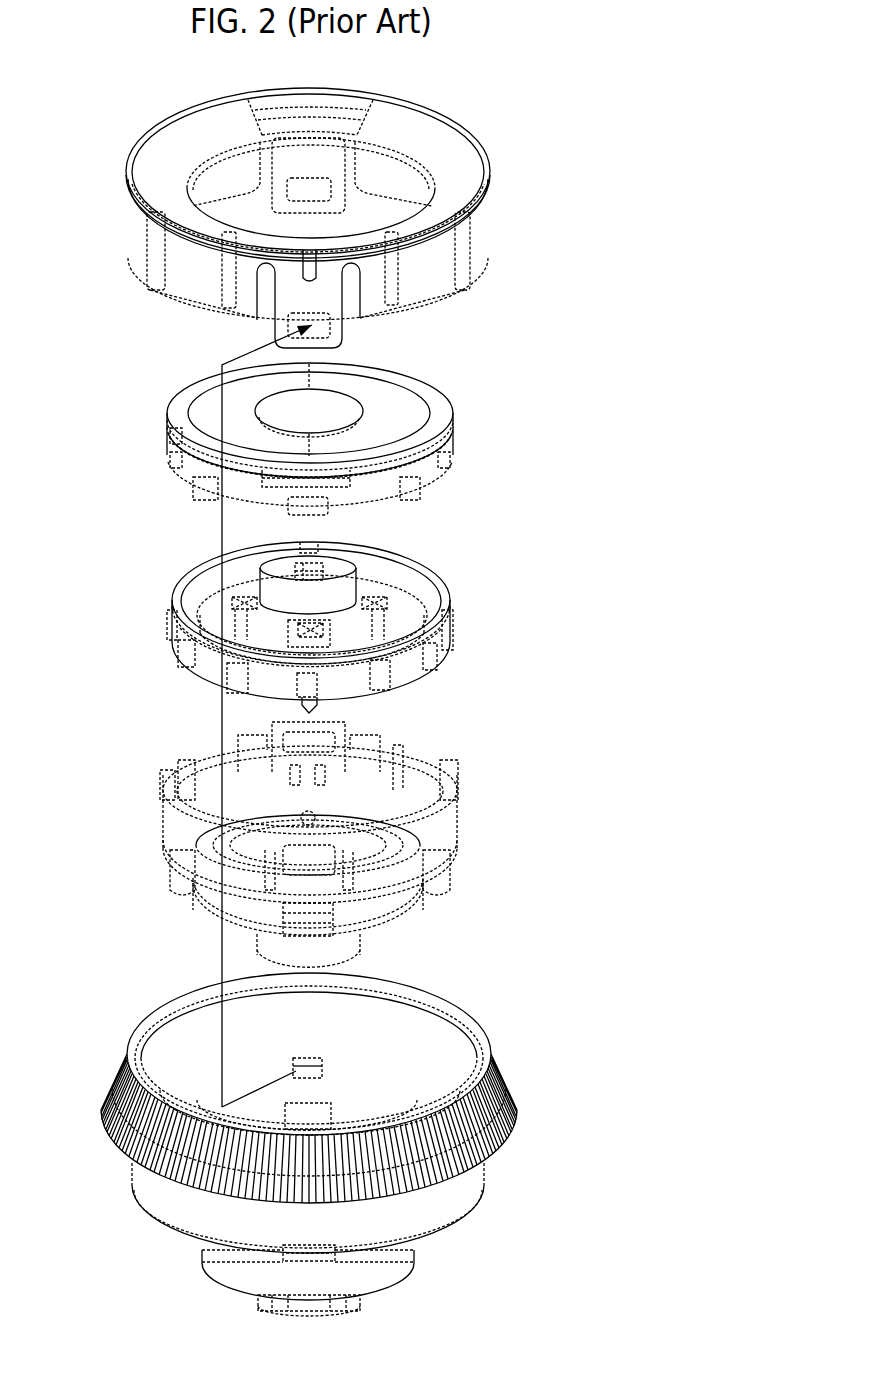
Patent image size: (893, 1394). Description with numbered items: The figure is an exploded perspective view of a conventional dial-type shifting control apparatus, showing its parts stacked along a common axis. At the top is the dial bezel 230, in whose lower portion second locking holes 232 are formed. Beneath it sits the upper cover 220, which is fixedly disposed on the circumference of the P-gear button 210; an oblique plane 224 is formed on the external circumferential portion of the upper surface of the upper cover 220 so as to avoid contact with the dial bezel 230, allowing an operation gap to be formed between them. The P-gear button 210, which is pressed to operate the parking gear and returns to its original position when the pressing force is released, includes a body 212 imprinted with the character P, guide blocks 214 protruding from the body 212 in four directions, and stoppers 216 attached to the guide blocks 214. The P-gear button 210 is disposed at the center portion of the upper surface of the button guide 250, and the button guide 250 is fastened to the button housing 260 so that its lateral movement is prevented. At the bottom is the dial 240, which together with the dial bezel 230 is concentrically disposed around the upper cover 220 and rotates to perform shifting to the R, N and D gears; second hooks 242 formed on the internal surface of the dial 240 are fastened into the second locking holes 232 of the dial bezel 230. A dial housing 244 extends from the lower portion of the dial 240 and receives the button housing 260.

The P-gear button 210 is at (399, 587).
The body 212 is at (343, 567).
The guide blocks 214 is at (400, 636).
The stoppers 216 is at (378, 588).
The upper cover 220 is at (330, 431).
The oblique plane 224 is at (197, 447).
The dial bezel 230 is at (353, 214).
The second locking holes 232 is at (330, 327).
The dial 240 is at (341, 1134).
The second hooks 242 is at (318, 1067).
The dial housing 244 is at (450, 1200).
The button guide 250 is at (316, 618).
The button housing 260 is at (157, 840).